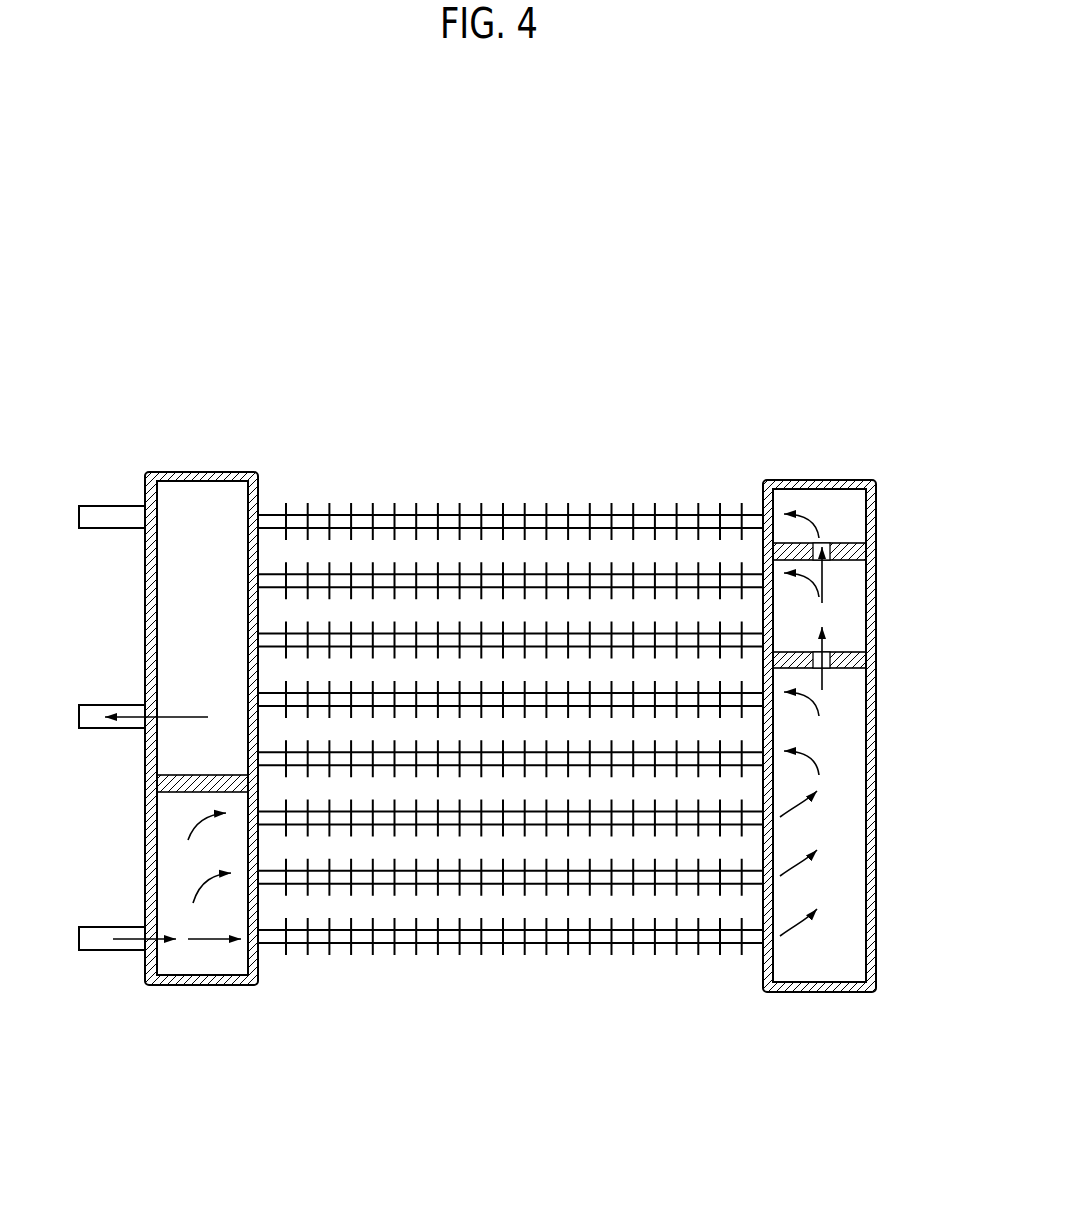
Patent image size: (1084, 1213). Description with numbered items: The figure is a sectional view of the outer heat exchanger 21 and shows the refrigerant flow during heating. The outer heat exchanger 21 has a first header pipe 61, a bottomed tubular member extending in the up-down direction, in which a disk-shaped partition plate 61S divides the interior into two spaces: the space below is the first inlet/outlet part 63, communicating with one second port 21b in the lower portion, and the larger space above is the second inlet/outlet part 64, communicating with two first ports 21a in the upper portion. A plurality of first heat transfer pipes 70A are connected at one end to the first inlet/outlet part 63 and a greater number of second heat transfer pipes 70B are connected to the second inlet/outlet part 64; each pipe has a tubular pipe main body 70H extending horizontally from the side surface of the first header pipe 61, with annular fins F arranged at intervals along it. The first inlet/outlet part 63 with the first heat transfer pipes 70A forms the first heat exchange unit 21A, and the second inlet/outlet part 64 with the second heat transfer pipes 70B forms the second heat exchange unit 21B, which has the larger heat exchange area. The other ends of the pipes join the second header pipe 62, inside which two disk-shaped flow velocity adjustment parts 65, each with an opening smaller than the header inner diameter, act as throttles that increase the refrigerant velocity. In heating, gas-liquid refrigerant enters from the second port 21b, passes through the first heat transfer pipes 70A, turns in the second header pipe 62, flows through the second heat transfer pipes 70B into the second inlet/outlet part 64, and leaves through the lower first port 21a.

The outer heat exchanger 21 is at (114, 458).
The first port 21a is at (95, 708).
The second port 21b is at (91, 958).
The first heat exchange unit 21A is at (325, 965).
The second heat exchange unit 21B is at (340, 498).
The first header pipe 61 is at (215, 980).
The partition plate 61S is at (165, 782).
The second header pipe 62 is at (832, 985).
The first inlet/outlet part 63 is at (165, 848).
The second inlet/outlet part 64 is at (220, 495).
The flow velocity adjustment part 65 is at (860, 545).
The pipe main body 70H is at (467, 520).
The first heat transfer pipe 70A is at (480, 952).
The second heat transfer pipe 70B is at (571, 498).
The fin F is at (398, 508).